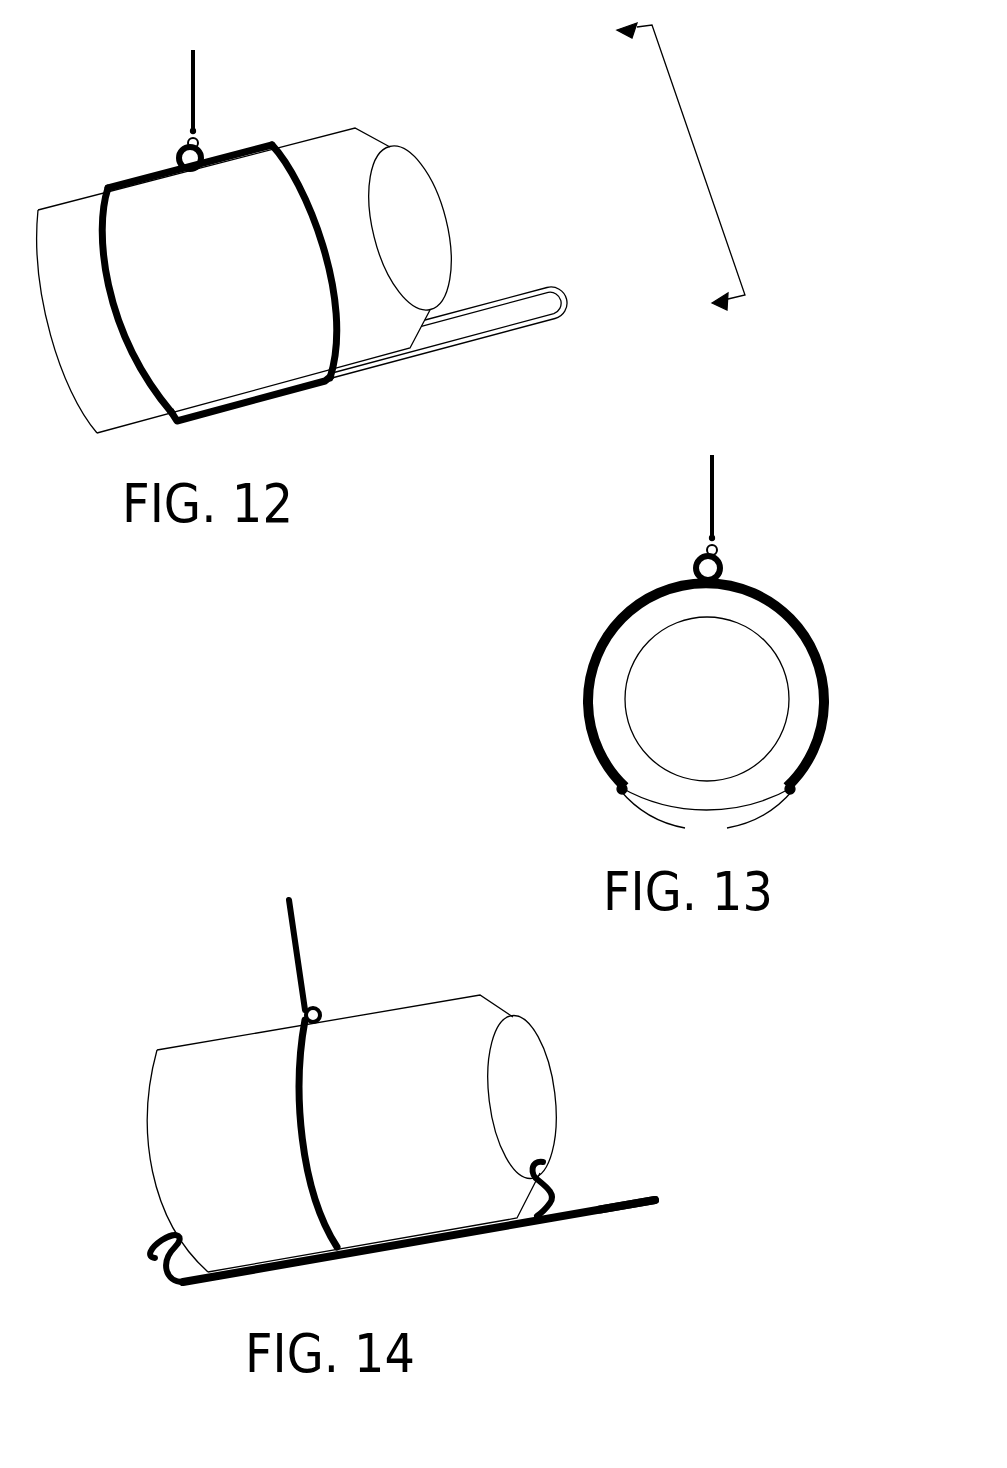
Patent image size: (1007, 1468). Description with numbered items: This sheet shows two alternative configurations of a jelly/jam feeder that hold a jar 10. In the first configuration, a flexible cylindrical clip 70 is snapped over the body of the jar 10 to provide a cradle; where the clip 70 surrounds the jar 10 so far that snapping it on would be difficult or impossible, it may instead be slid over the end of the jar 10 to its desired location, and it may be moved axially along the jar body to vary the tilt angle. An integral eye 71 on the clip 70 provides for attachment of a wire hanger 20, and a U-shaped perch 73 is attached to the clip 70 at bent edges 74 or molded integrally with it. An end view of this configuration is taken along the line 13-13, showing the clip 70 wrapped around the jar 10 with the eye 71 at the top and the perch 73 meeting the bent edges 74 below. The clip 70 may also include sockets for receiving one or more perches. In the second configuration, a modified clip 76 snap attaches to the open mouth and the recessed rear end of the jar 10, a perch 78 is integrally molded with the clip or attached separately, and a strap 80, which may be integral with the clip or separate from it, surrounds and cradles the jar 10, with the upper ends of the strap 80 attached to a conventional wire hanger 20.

In FIG. 12, the jar 10 is at (322, 196).
In FIG. 13, the jar 10 is at (692, 616).
In FIG. 14, the jar 10 is at (234, 1149).
In FIG. 12, the section line 13- 13 is at (661, 175).
In FIG. 12, the wire hanger 20 is at (197, 115).
In FIG. 13, the wire hanger 20 is at (713, 518).
In FIG. 14, the wire hanger 20 is at (295, 910).
In FIG. 12, the flexible cylindrical clip 70 is at (197, 297).
In FIG. 13, the flexible cylindrical clip 70 is at (627, 605).
In FIG. 12, the integral eye 71 is at (175, 160).
In FIG. 13, the integral eye 71 is at (693, 563).
In FIG. 12, the U-shaped perch 73 is at (567, 303).
In FIG. 13, the U-shaped perch 73 is at (615, 785).
In FIG. 13, the bent edges 74 is at (706, 815).
In FIG. 14, the modified clip 76 is at (420, 1232).
In FIG. 14, the perch 78 is at (633, 1197).
In FIG. 14, the strap 80 is at (310, 1142).